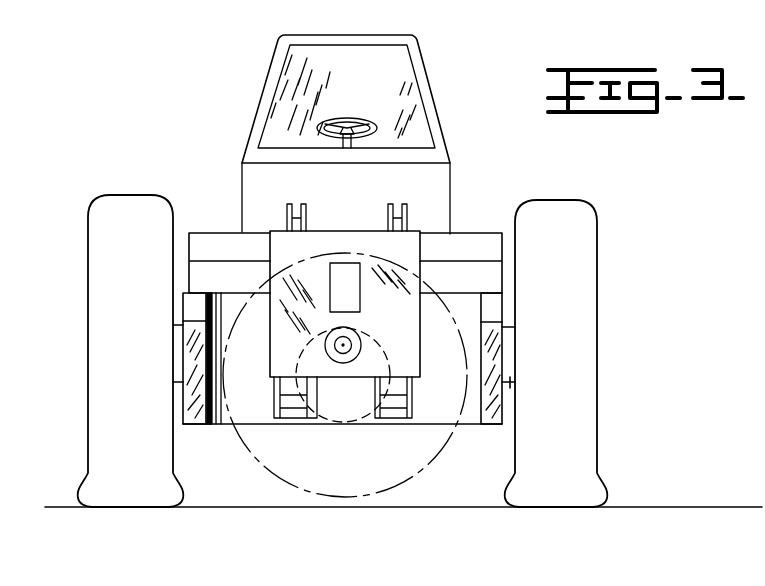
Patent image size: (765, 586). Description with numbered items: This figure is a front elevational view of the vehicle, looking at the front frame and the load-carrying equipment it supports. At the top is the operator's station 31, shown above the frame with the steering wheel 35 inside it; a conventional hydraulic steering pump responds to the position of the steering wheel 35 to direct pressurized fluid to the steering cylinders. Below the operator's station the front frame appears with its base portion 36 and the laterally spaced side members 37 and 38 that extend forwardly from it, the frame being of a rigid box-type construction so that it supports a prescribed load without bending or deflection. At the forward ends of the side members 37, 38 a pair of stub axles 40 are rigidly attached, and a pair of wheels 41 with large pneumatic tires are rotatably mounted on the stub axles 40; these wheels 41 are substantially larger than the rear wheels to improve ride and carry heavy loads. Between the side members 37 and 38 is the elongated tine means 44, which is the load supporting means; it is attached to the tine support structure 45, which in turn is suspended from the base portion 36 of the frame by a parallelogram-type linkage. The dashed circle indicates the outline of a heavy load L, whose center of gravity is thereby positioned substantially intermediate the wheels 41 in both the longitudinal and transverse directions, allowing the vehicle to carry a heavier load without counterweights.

The cab 31 is at (427, 66).
The steering wheel 35 is at (340, 120).
The tine support structure 45 is at (354, 240).
The tine means 44 is at (352, 338).
The base portion 36 is at (353, 410).
The side member 37 is at (197, 425).
The side member 38 is at (493, 427).
The stub axle 40 is at (173, 367).
The wheels 41 is at (95, 252).
The load L is at (365, 485).